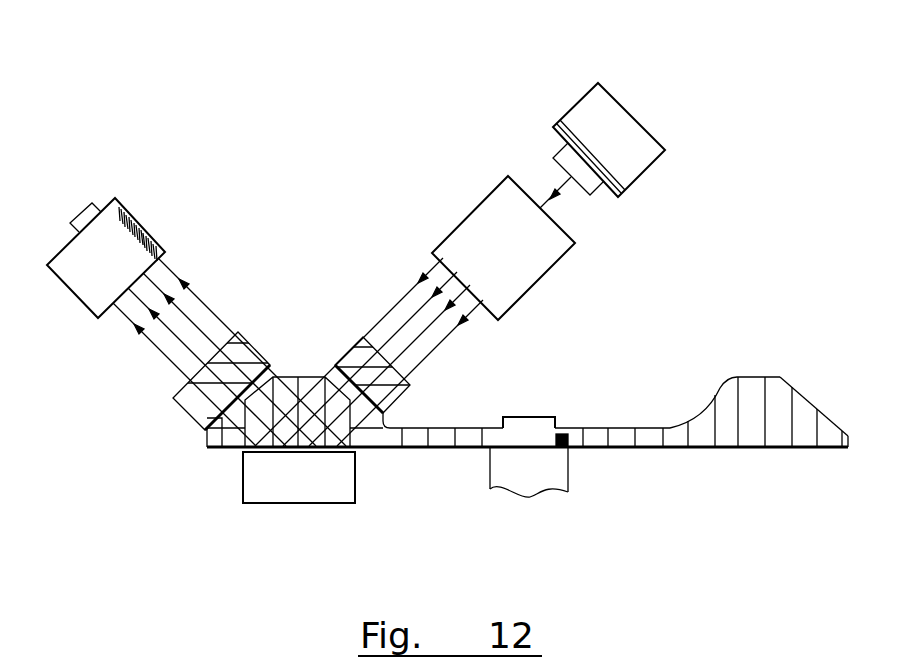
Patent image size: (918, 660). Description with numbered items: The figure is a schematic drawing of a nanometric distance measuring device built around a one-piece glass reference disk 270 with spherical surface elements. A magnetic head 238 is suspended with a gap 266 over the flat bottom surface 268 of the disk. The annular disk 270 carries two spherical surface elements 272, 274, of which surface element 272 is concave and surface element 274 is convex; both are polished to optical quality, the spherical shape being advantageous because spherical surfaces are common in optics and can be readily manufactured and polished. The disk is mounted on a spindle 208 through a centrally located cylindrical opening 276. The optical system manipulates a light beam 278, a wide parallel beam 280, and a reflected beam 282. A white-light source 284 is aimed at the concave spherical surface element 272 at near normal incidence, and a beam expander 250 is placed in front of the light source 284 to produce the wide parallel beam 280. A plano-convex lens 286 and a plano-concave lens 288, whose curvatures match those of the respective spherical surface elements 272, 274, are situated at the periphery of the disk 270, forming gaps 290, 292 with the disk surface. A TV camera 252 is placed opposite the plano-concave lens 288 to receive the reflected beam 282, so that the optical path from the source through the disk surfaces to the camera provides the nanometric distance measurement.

The spindle 208 is at (535, 470).
The magnetic head 238 is at (305, 483).
The beam expander 250 is at (495, 223).
The TV camera 252 is at (85, 252).
The gap 266 is at (357, 452).
The flat bottom surface 268 is at (223, 448).
The glass reference disk 270 is at (778, 417).
The spherical surface element 272 is at (720, 390).
The spherical surface element 274 is at (805, 392).
The cylindrical opening 276 is at (570, 450).
The light beam 278 is at (547, 205).
The wide parallel beam 280 is at (470, 317).
The reflected beam 282 is at (148, 342).
The white-light source 284 is at (612, 140).
The plano-convex lens 286 is at (348, 342).
The plano-concave lens 288 is at (252, 358).
The gap 290 is at (382, 422).
The gap 292 is at (205, 430).